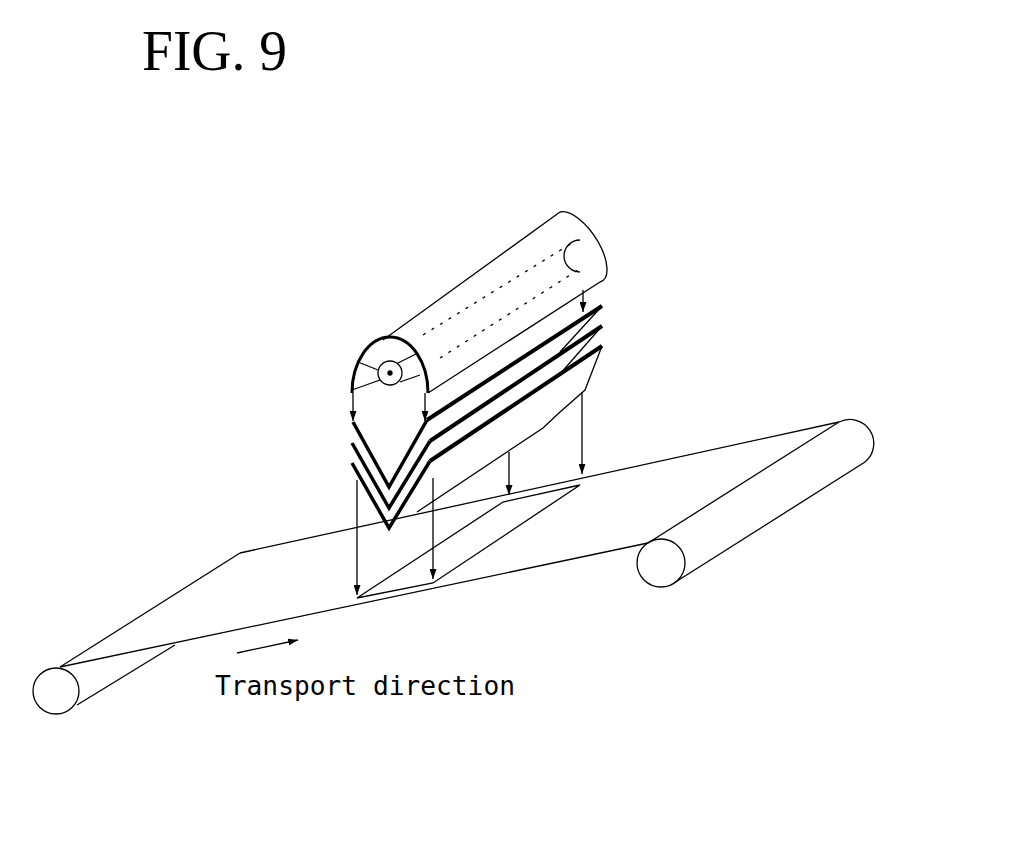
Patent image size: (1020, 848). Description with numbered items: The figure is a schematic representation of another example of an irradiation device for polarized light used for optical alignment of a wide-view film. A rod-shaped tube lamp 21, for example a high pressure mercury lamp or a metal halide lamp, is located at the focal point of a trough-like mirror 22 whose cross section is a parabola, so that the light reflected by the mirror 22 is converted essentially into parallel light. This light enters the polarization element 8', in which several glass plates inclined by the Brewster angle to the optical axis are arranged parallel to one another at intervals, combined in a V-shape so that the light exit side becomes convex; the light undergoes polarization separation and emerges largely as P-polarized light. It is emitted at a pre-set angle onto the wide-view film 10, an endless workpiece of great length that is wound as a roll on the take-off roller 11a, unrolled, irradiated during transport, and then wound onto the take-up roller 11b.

The trough-like mirror 22 is at (590, 222).
The rod-shaped tube lamp 21 is at (352, 366).
The polarization element 8' is at (517, 452).
The wide-view film 10 is at (281, 544).
The take-off roller 11a is at (58, 715).
The take-up roller 11b is at (662, 588).